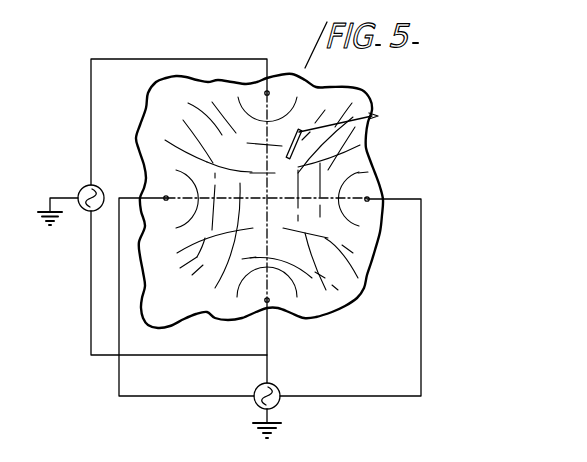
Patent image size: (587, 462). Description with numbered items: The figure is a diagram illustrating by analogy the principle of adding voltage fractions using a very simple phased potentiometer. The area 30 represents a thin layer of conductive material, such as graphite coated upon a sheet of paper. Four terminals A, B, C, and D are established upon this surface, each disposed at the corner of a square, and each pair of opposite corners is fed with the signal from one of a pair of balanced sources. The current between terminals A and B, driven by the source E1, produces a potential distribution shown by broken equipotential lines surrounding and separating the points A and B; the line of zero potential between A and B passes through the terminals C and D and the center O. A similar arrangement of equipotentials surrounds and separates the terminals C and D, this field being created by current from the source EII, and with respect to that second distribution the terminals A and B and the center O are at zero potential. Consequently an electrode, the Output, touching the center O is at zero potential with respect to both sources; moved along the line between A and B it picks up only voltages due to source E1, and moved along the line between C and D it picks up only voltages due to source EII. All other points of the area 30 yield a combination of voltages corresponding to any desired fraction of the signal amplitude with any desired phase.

The area of conductive material 30 is at (365, 187).
The terminal A is at (274, 96).
The terminal B is at (274, 299).
The terminal C is at (160, 208).
The terminal D is at (359, 209).
The center O is at (260, 208).
The output electrode Output is at (365, 135).
The source E1 is at (84, 215).
The source EII is at (280, 403).